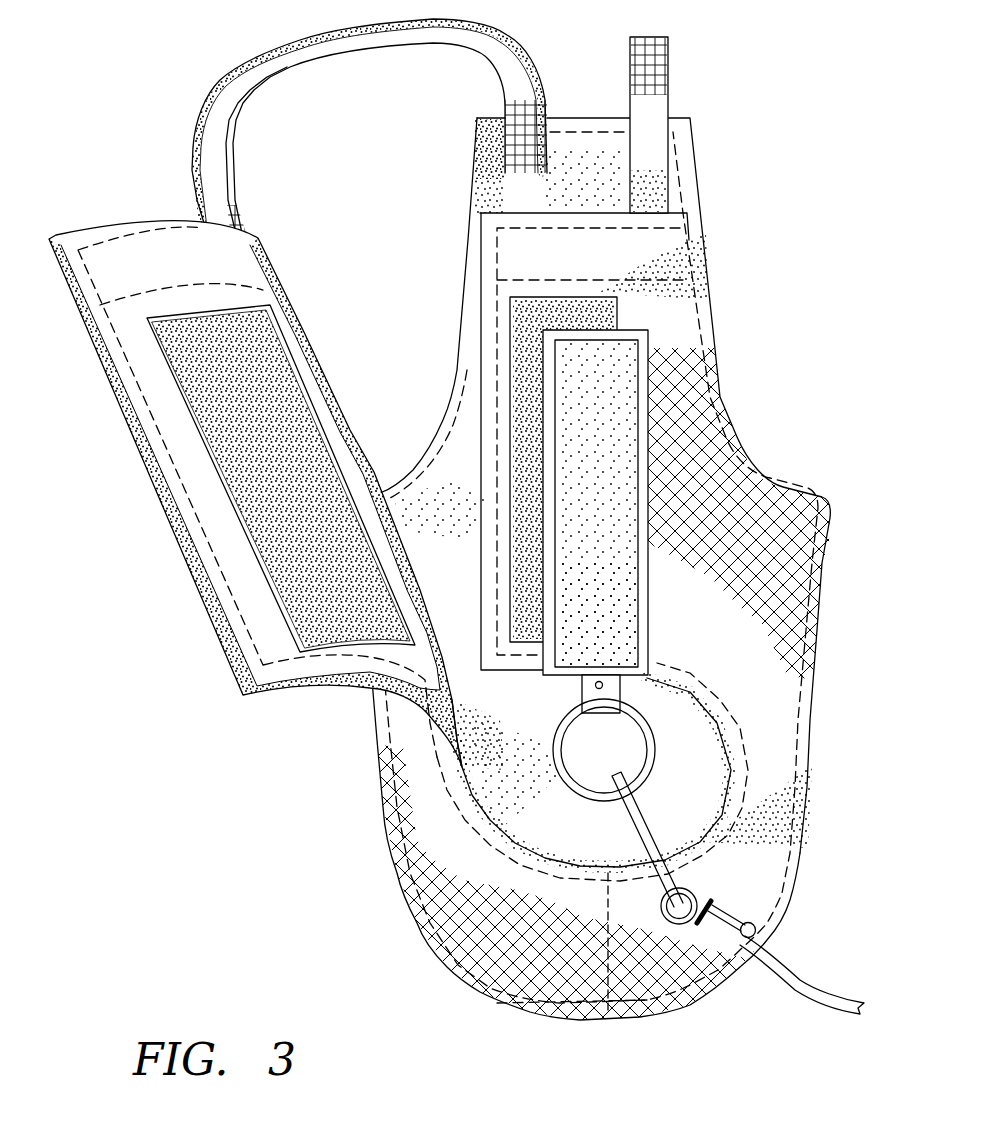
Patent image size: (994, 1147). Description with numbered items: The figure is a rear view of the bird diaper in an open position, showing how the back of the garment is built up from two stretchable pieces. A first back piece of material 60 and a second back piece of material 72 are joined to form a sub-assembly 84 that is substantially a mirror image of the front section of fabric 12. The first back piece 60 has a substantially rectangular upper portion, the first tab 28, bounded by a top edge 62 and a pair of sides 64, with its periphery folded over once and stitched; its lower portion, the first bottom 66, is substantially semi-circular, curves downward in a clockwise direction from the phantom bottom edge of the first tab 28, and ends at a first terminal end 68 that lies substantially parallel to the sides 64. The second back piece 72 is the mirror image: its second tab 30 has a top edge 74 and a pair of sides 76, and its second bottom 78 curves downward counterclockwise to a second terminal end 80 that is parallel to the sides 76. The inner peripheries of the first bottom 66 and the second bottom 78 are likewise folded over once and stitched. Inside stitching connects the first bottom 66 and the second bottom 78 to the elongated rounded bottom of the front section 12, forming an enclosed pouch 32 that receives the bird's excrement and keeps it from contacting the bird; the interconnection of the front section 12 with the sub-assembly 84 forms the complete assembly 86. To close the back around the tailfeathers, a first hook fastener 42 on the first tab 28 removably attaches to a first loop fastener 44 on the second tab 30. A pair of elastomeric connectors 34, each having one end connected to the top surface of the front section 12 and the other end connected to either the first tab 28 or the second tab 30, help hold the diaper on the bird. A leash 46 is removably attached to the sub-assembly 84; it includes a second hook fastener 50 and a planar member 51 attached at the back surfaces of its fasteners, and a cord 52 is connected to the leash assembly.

The front section of fabric 12 is at (697, 193).
The first tab 28 is at (656, 343).
The second tab 30 is at (203, 567).
The pouch 32 is at (727, 983).
The connectors 34 is at (253, 58).
The first hook fastener 42 is at (512, 340).
The first loop fastener 44 is at (310, 407).
The leash 46 is at (662, 397).
The second hook fastener 50 is at (568, 510).
The planar member 51 is at (640, 330).
The cord 52 is at (787, 967).
The first back piece of material 60 is at (688, 433).
The top edge 62 is at (570, 213).
The pair of sides 64 is at (483, 428).
The first semi-circular bottom 66 is at (713, 645).
The first terminal end 68 is at (610, 966).
The second back piece of material 72 is at (403, 710).
The top edge 74 is at (147, 220).
The pair of sides 76 is at (105, 380).
The second semi-circular bottom 78 is at (410, 775).
The second terminal end 80 is at (608, 900).
The sub-assembly 84 is at (410, 927).
The assembly 86 is at (244, 858).